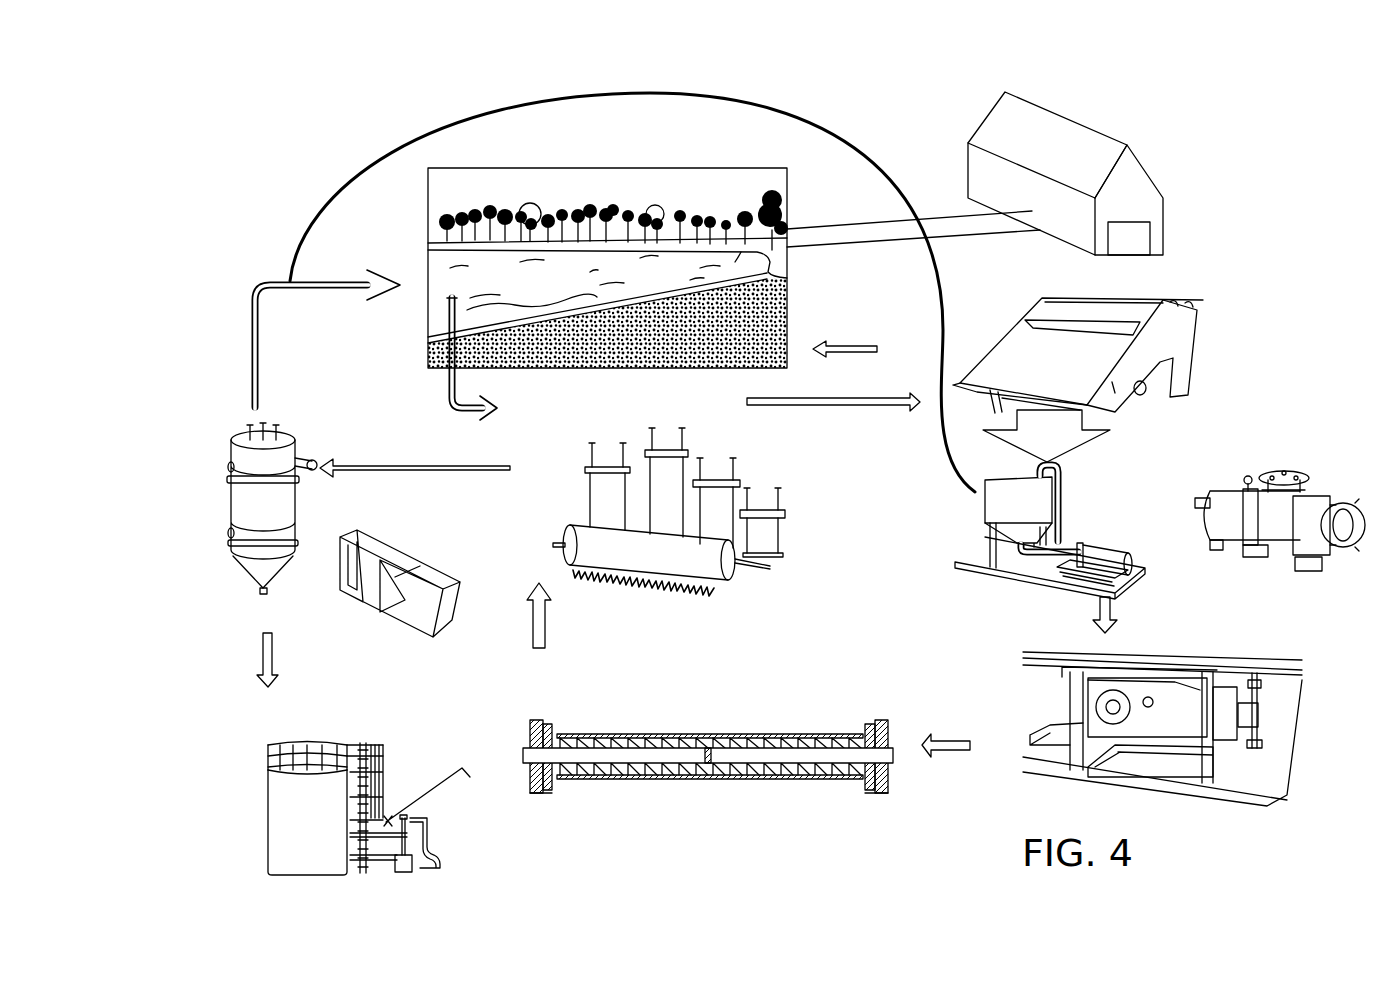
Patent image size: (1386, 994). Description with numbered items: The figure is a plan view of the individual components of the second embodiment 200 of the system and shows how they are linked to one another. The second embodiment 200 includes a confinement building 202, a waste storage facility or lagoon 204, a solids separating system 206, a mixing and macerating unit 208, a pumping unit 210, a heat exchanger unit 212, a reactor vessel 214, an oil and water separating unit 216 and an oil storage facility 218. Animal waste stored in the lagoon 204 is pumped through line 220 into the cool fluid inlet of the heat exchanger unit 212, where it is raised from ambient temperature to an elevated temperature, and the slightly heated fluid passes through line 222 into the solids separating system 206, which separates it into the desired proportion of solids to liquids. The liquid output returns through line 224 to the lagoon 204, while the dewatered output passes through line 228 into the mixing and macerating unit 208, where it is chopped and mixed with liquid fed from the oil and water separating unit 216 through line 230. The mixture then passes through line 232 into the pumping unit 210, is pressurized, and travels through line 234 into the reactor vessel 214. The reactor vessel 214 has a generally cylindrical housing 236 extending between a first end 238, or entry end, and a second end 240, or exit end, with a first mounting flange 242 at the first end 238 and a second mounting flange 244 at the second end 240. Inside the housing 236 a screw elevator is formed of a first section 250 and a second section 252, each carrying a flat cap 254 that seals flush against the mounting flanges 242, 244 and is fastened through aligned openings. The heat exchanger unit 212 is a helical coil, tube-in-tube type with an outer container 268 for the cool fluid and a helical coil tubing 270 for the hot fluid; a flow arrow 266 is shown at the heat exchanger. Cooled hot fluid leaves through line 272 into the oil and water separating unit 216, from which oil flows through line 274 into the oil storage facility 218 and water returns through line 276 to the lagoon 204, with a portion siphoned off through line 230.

The second embodiment 200 is at (247, 146).
The confinement building 202 is at (1148, 168).
The lagoon 204 is at (701, 154).
The solids separating system 206 is at (1189, 298).
The mixing and macerating unit 208 is at (1060, 501).
The pumping unit 210 is at (1238, 640).
The heat exchanger unit 212 is at (781, 467).
The reactor vessel 214 is at (737, 700).
The oil and water separating unit 216 is at (302, 418).
The oil storage facility 218 is at (376, 719).
The line 220 is at (446, 380).
The line 222 is at (840, 398).
The line 224 is at (855, 348).
The line 228 is at (1078, 450).
The line 230 is at (383, 152).
The line 232 is at (1112, 610).
The line 234 is at (945, 758).
The housing 236 is at (752, 779).
The first end 238 is at (890, 802).
The second end 240 is at (528, 802).
The first mounting flange 242 is at (870, 720).
The second mounting flange 244 is at (548, 720).
The first section 250 is at (805, 740).
The second section 252 is at (625, 740).
The cap 254 is at (537, 720).
The flow arrow 266 is at (548, 621).
The outer container 268 is at (585, 533).
The helical coil tubing 270 is at (695, 596).
The line 272 is at (465, 472).
The line 274 is at (276, 655).
The line 276 is at (253, 356).